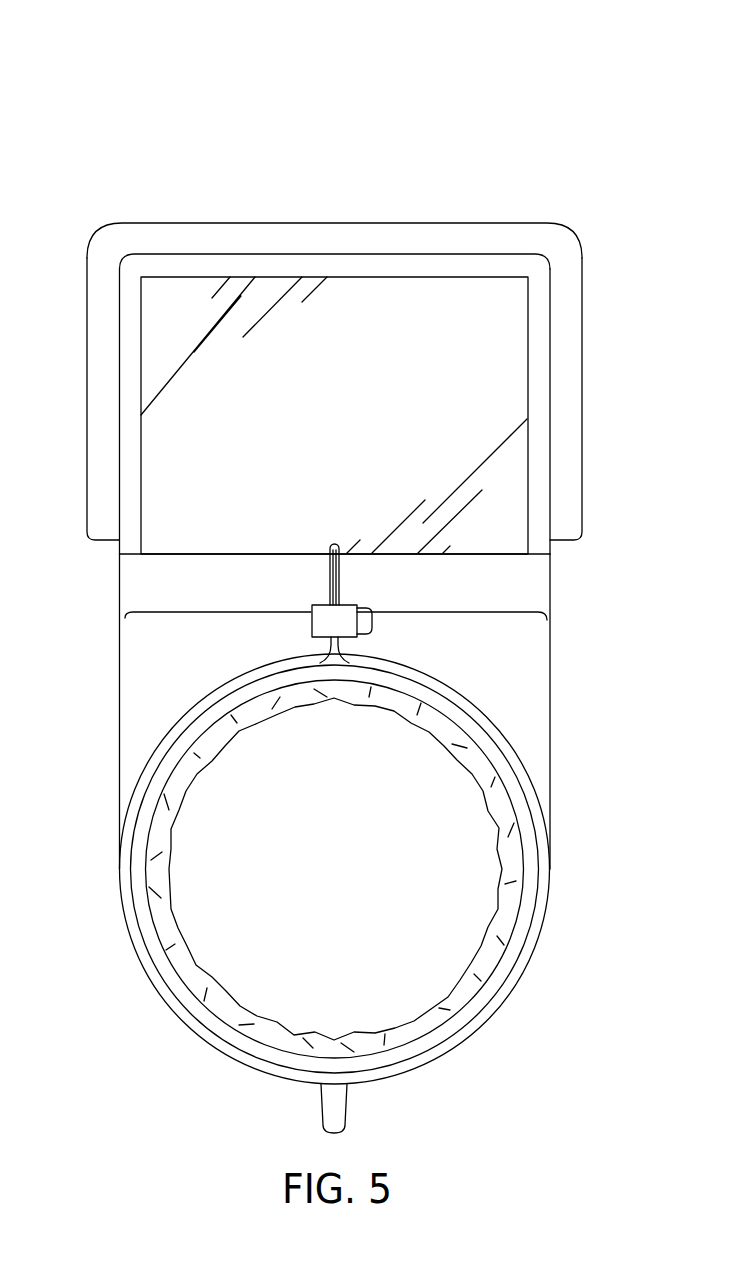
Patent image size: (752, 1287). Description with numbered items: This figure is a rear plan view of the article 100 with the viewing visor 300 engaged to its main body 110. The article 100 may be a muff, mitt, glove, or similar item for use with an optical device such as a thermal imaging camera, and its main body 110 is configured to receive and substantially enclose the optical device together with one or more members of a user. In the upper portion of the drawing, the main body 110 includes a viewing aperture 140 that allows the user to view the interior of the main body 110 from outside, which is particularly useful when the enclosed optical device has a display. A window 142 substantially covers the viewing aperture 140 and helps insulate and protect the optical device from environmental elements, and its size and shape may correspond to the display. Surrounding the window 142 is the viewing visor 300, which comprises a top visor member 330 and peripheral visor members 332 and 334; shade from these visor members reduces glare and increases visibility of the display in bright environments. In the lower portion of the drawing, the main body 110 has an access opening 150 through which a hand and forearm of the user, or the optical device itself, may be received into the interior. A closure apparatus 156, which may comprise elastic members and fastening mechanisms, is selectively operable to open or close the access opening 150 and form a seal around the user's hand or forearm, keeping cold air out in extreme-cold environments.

The article 100 is at (146, 90).
The viewing visor 300 is at (480, 167).
The top visor member 330 is at (252, 238).
The peripheral visor member 334 is at (103, 371).
The peripheral visor member 332 is at (568, 458).
The viewing aperture 140 is at (462, 362).
The window 142 is at (190, 468).
The main body 110 is at (513, 583).
The closure apparatus 156 is at (143, 994).
The access opening 150 is at (408, 916).